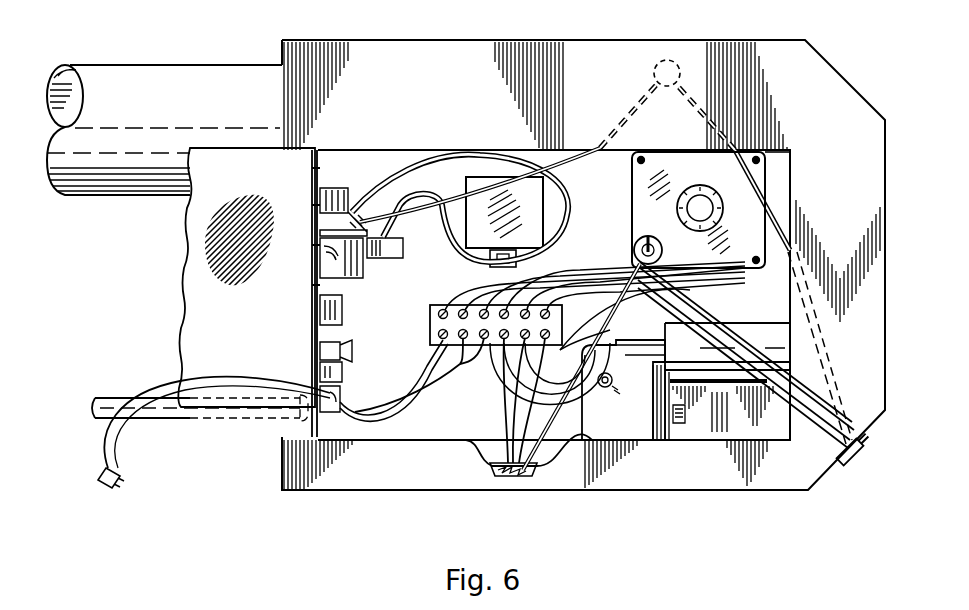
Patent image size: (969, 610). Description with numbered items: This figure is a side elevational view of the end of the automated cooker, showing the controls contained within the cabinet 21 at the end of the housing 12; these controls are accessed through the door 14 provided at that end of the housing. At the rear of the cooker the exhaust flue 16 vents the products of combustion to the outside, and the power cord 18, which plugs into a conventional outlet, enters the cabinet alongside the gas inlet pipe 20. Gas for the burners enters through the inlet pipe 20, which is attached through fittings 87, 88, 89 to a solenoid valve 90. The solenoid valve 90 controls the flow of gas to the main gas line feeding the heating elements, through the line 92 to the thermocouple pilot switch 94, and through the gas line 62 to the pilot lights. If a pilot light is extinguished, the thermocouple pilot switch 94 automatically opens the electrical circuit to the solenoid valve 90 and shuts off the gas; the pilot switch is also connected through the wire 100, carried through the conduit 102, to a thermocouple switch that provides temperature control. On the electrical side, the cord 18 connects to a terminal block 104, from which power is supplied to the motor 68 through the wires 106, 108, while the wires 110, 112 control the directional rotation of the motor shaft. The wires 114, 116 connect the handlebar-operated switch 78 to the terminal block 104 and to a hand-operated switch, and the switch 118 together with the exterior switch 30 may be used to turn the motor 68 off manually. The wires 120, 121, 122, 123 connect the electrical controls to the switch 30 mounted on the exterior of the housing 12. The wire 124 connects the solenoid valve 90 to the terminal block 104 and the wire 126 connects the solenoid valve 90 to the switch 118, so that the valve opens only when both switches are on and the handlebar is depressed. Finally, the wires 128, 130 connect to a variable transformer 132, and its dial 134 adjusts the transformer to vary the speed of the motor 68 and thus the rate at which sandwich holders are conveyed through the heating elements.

The housing 12 is at (588, 99).
The door 14 is at (262, 180).
The exhaust flue 16 is at (142, 66).
The power cord 18 is at (122, 464).
The inlet pipe 20 is at (124, 385).
The cabinet 21 is at (484, 390).
The switch 30 is at (856, 468).
The gas line 62 is at (580, 200).
The motor 68 is at (754, 334).
The switch 78 is at (508, 480).
The fitting 87 is at (340, 396).
The fitting 88 is at (340, 372).
The fitting 89 is at (343, 305).
The solenoid valve 90 is at (376, 275).
The line 92 is at (472, 270).
The thermocouple pilot switch 94 is at (514, 198).
The wire 100 is at (602, 132).
The conduit 102 is at (665, 60).
The terminal block 104 is at (428, 316).
The wire 106 is at (536, 418).
The wire 108 is at (554, 448).
The wire 110 is at (596, 334).
The wire 112 is at (594, 346).
The wire 114 is at (506, 412).
The wire 116 is at (512, 428).
The switch 118 is at (654, 234).
The wire 120 is at (758, 404).
The wire 121 is at (726, 386).
The wire 122 is at (808, 336).
The wire 123 is at (832, 376).
The wire 124 is at (388, 340).
The wire 126 is at (580, 268).
The wire 128 is at (721, 282).
The wire 130 is at (708, 292).
The variable transformer 132 is at (762, 224).
The dial 134 is at (728, 172).